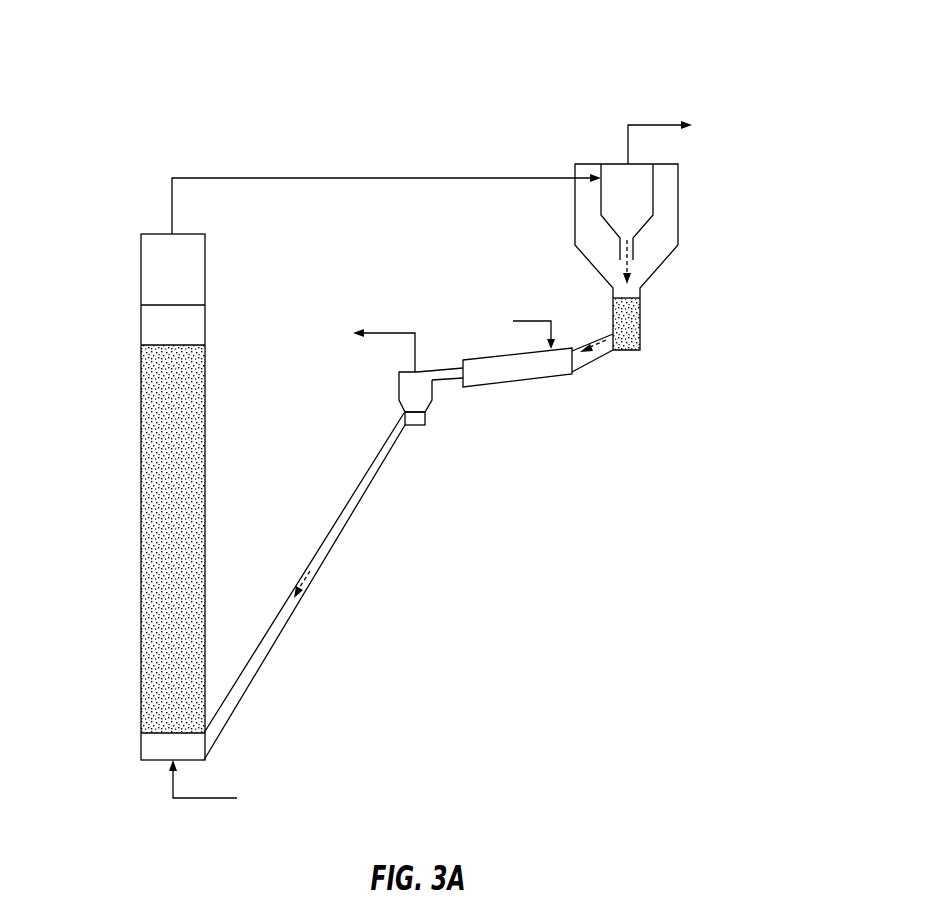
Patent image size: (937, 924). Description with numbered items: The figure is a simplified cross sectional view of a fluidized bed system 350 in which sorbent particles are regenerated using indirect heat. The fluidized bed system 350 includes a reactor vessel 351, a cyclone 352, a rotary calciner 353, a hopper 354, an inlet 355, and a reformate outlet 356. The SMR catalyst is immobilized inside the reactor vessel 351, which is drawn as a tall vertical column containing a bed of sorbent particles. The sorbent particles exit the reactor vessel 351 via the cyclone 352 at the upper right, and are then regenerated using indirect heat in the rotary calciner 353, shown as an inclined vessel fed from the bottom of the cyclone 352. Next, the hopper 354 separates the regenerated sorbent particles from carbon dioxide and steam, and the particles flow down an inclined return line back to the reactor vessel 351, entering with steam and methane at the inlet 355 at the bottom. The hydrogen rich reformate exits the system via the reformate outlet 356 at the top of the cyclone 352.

The fluidized bed system 350 is at (125, 60).
The reactor vessel 351 is at (140, 497).
The cyclone 352 is at (680, 205).
The rotary calciner 353 is at (517, 382).
The hopper 354 is at (415, 428).
The inlet 355 is at (195, 798).
The reformate outlet 356 is at (650, 122).